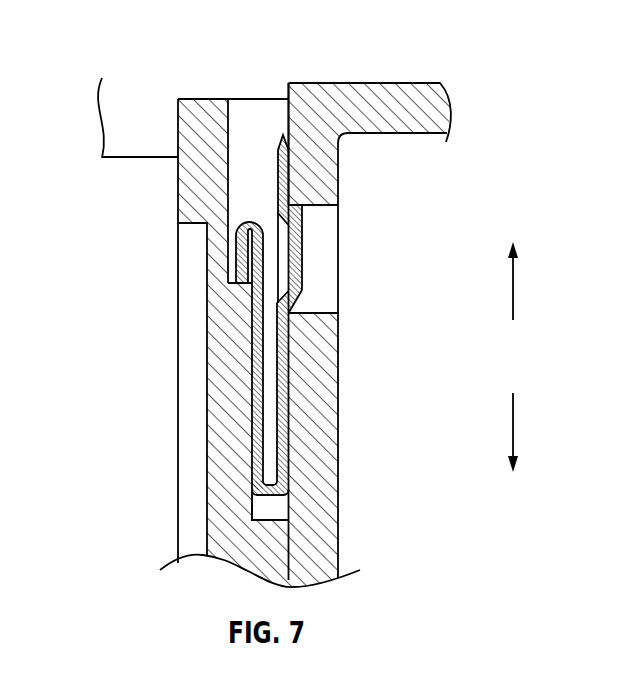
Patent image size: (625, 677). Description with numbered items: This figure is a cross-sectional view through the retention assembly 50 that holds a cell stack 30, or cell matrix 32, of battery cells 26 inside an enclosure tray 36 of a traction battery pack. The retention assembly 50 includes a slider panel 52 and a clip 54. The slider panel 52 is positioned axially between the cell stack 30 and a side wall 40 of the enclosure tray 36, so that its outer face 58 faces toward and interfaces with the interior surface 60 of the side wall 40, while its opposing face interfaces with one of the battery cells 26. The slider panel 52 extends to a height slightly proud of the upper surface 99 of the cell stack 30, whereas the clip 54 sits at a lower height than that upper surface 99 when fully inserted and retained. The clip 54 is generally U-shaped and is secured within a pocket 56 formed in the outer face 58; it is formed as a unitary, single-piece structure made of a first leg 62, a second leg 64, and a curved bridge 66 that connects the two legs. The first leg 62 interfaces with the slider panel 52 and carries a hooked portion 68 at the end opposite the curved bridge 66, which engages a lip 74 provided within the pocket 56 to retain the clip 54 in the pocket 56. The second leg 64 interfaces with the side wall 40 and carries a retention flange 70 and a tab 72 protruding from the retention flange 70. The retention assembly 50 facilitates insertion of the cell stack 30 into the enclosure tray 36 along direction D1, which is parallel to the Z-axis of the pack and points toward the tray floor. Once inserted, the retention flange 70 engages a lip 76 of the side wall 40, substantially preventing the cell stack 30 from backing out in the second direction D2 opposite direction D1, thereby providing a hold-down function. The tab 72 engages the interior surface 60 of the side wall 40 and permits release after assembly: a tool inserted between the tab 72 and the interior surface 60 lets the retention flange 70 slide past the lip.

The battery cells 26 is at (130, 261).
The cell stack 30 is at (134, 92).
The cell matrix 32 is at (123, 97).
The enclosure tray 36 is at (376, 99).
The side wall 40 is at (328, 194).
The retention assembly 50 is at (215, 371).
The slider panel 52 is at (237, 527).
The clip 54 is at (277, 522).
The pocket 56 is at (235, 170).
The outer face 58 is at (257, 447).
The interior surface 60 is at (291, 107).
The first leg 62 is at (260, 395).
The second leg 64 is at (290, 396).
The curved bridge 66 is at (281, 494).
The hooked portion 68 is at (250, 221).
The retention flange 70 is at (297, 267).
The tab 72 is at (282, 147).
The lip 74 is at (232, 280).
The lip 76 is at (321, 208).
The upper surface 99 is at (135, 157).
The direction D1 is at (513, 432).
The second direction D2 is at (513, 287).